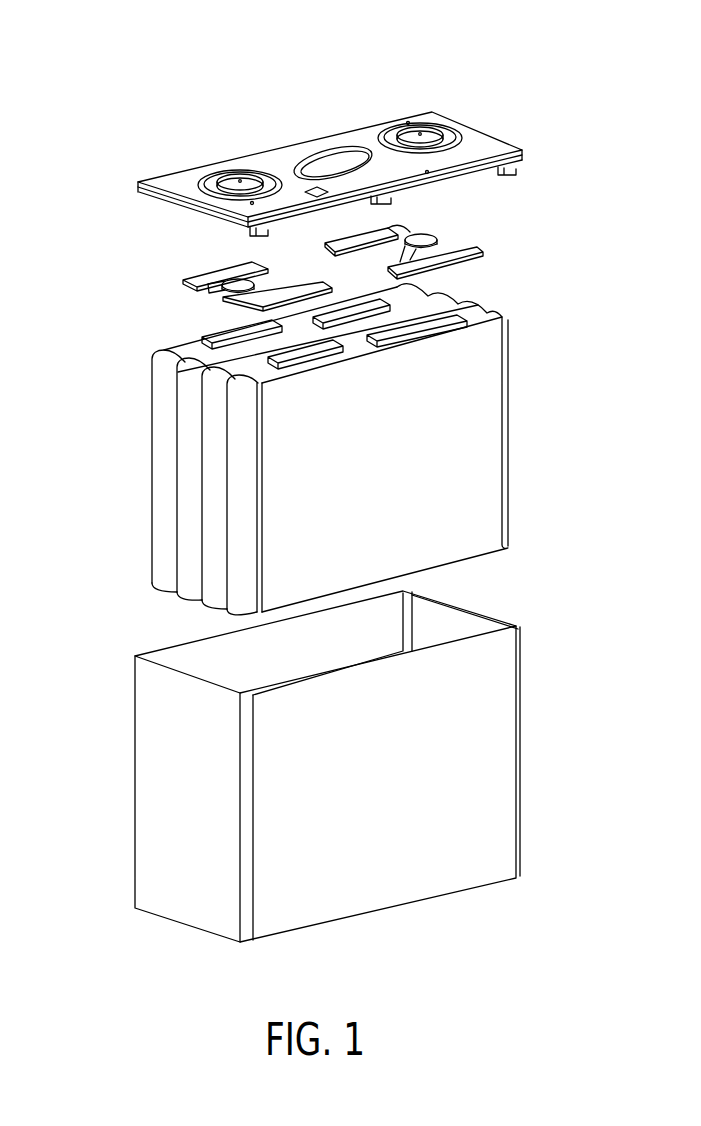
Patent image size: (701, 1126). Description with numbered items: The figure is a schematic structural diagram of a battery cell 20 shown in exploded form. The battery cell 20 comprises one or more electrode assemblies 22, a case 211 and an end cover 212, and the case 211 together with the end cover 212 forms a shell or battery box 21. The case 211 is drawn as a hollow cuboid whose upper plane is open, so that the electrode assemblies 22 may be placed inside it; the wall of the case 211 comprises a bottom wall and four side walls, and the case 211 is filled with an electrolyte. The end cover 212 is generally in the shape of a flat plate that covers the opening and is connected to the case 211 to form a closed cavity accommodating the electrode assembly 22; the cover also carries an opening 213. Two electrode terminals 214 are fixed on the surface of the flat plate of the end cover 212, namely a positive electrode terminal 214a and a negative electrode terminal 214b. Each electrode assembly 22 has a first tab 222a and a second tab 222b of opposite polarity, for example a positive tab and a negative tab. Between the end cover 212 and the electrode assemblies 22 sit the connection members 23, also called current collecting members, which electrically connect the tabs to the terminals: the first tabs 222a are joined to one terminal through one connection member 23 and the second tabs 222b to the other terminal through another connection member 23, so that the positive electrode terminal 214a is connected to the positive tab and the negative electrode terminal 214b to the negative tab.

The battery cell 20 is at (110, 86).
The battery box 21 is at (143, 192).
The case 211 is at (482, 746).
The end cover 212 is at (477, 148).
The opening 213 is at (390, 170).
The electrode terminals 214 is at (432, 50).
The positive electrode terminal 214a is at (222, 175).
The negative electrode terminal 214b is at (420, 136).
The electrode assembly 22 is at (460, 448).
The first tab 222a is at (265, 355).
The second tab 222b is at (473, 317).
The connection member 23 is at (468, 255).